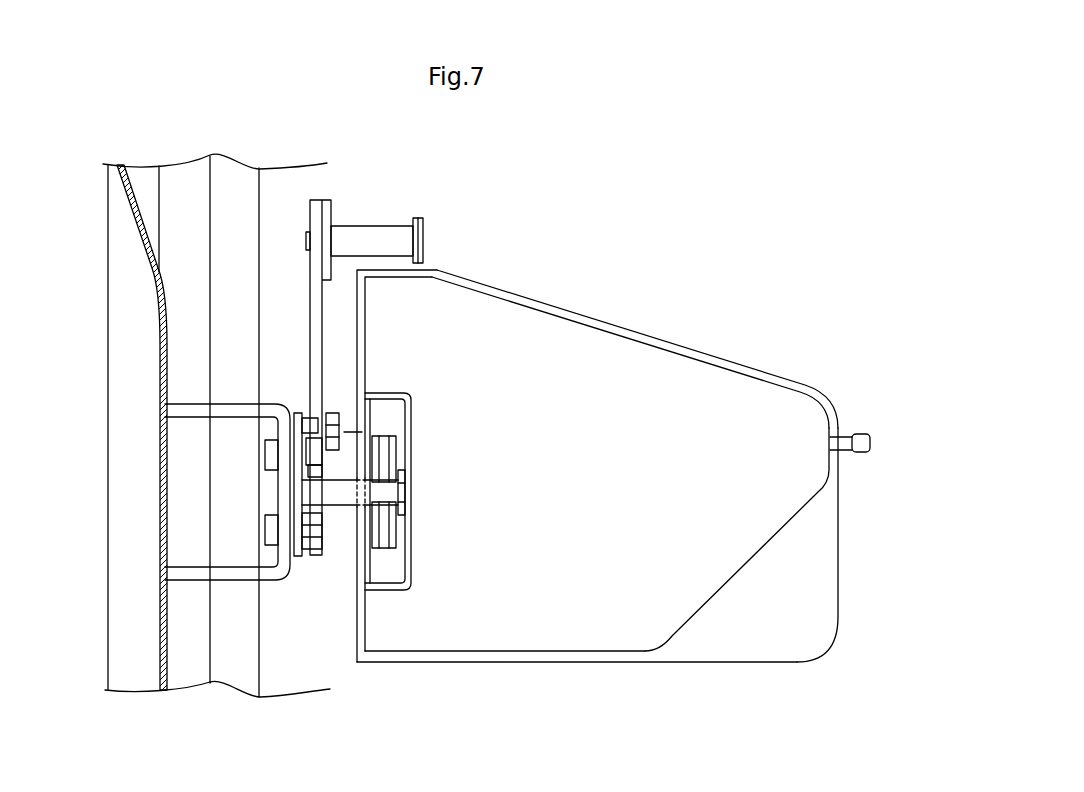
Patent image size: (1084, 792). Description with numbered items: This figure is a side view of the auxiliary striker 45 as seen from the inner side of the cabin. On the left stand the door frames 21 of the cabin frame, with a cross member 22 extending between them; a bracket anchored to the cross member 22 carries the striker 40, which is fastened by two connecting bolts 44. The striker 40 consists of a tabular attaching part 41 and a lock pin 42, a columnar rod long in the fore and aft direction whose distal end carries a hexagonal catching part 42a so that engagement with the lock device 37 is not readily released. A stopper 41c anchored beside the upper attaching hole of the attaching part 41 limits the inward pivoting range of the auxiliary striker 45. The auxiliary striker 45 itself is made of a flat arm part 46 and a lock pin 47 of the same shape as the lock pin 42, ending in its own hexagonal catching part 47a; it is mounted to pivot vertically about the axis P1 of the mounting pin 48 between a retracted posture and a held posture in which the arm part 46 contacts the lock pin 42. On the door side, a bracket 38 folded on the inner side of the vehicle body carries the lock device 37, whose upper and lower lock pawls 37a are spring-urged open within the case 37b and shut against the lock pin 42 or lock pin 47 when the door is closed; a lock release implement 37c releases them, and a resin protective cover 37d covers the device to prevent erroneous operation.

The door frame 21 is at (257, 651).
The cross member 22 is at (160, 531).
The lock device 37 is at (618, 488).
The lock pawl 37a is at (381, 468).
The case 37b is at (405, 563).
The lock release implement 37c is at (855, 433).
The protective cover 37d is at (607, 340).
The bracket 38 is at (233, 579).
The striker 40 is at (407, 475).
The attaching part 41 is at (297, 560).
The stopper 41c is at (308, 420).
The lock pin 42 is at (302, 494).
The catching part 42a is at (407, 497).
The connecting bolt 44 is at (315, 532).
The auxiliary striker 45 is at (359, 353).
The arm part 46 is at (310, 300).
The lock pin 47 is at (357, 226).
The catching part 47a is at (418, 240).
The mounting pin 48 is at (338, 412).
The axis P1 is at (349, 432).